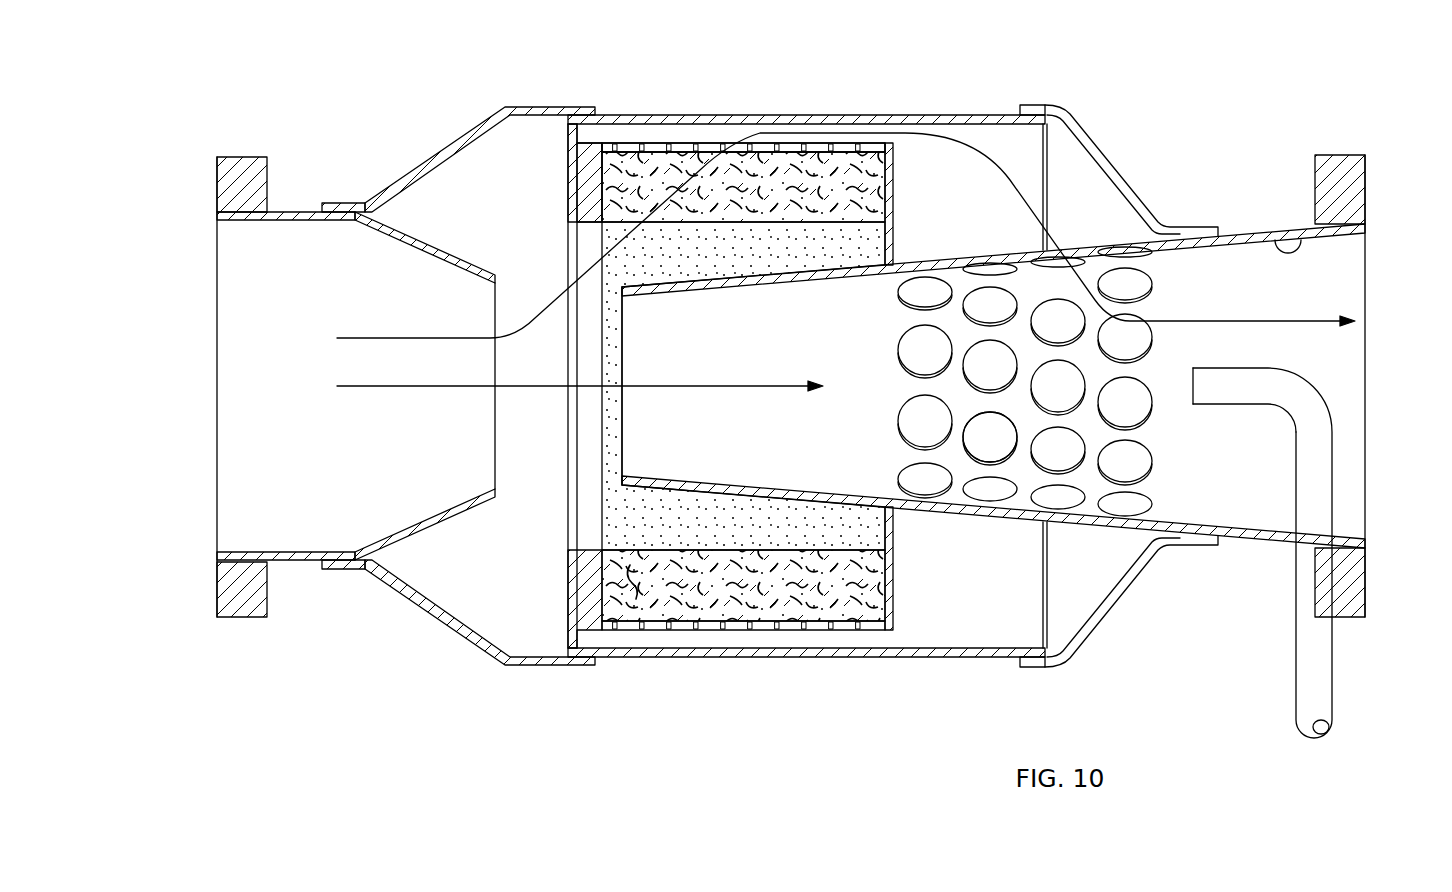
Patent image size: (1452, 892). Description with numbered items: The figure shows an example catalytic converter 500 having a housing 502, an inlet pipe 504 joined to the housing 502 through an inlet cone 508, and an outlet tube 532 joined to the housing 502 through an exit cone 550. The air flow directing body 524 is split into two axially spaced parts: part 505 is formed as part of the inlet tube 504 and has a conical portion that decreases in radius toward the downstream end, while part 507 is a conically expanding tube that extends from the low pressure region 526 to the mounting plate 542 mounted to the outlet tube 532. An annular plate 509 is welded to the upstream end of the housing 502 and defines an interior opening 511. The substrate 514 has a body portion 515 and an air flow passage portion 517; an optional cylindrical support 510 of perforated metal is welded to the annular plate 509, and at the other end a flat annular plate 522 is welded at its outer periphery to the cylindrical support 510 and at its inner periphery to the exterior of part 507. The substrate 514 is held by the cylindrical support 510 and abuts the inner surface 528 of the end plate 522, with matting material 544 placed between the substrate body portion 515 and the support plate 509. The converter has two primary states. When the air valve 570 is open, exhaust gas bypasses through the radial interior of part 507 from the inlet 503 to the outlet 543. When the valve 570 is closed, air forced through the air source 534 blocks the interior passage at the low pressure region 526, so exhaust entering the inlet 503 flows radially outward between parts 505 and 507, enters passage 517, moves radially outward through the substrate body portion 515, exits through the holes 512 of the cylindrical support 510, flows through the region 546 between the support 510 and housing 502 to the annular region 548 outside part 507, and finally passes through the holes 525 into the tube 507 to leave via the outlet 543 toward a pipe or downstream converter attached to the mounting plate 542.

The catalytic converter 500 is at (797, 106).
The housing 502 is at (917, 115).
The inlet 503 is at (233, 368).
The inlet pipe 504 is at (285, 212).
The part of air flow directing body 505 is at (403, 238).
The part of air flow directing body 507 is at (703, 481).
The inlet cone 508 is at (453, 152).
The annular plate 509 is at (568, 608).
The cylindrical support 510 is at (622, 143).
The interior opening 511 is at (568, 280).
The holes 512 is at (805, 628).
The substrate 514 is at (616, 606).
The substrate body portion 515 is at (818, 175).
The air flow passage portion 517 is at (926, 252).
The flat annular plate 522 is at (893, 585).
The air flow directing body 524 is at (860, 247).
The holes 525 is at (990, 435).
The low pressure region 526 is at (615, 372).
The inner surface 528 is at (875, 587).
The outlet tube 532 is at (1278, 232).
The air source 534 is at (1262, 392).
The mounting plate 542 is at (1340, 162).
The outlet 543 is at (1352, 350).
The matting material 544 is at (585, 178).
The region 546 is at (742, 143).
The annular region 548 is at (968, 145).
The exit cone 550 is at (1072, 122).
The air valve 570 is at (1188, 275).